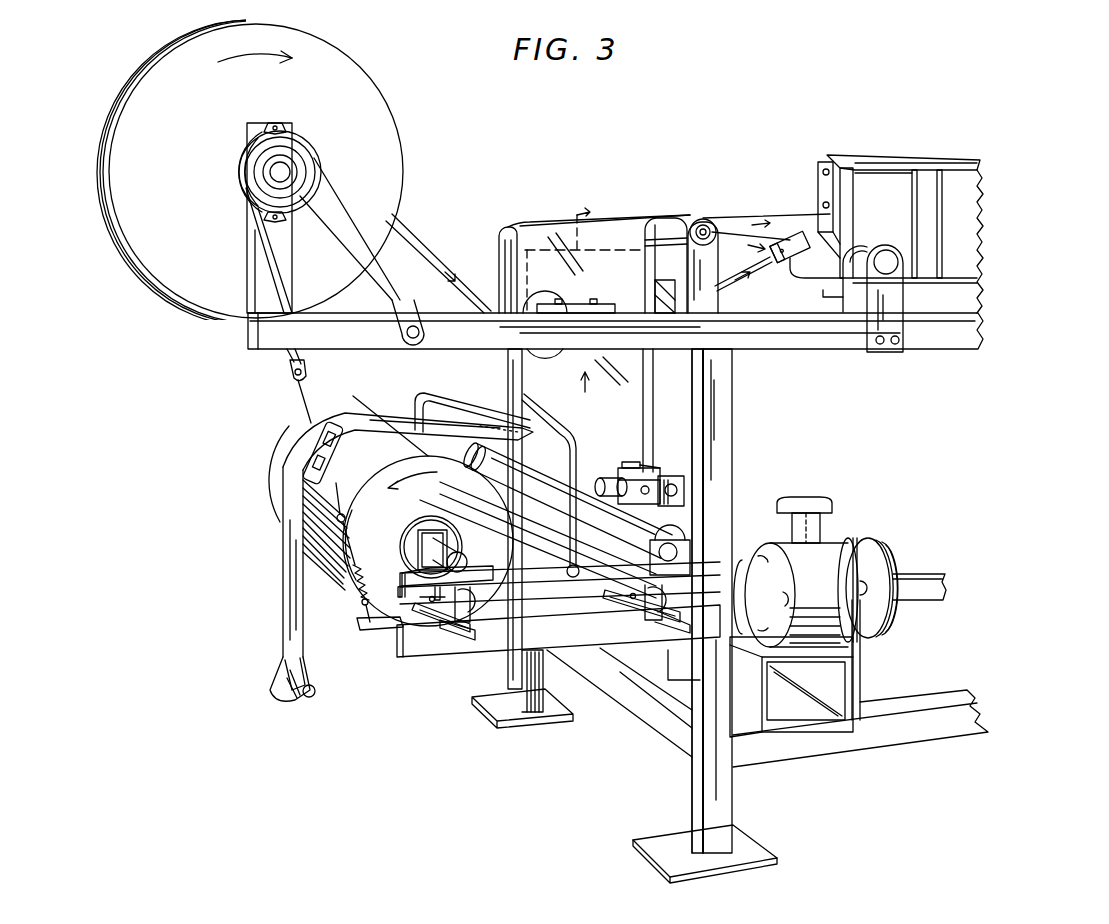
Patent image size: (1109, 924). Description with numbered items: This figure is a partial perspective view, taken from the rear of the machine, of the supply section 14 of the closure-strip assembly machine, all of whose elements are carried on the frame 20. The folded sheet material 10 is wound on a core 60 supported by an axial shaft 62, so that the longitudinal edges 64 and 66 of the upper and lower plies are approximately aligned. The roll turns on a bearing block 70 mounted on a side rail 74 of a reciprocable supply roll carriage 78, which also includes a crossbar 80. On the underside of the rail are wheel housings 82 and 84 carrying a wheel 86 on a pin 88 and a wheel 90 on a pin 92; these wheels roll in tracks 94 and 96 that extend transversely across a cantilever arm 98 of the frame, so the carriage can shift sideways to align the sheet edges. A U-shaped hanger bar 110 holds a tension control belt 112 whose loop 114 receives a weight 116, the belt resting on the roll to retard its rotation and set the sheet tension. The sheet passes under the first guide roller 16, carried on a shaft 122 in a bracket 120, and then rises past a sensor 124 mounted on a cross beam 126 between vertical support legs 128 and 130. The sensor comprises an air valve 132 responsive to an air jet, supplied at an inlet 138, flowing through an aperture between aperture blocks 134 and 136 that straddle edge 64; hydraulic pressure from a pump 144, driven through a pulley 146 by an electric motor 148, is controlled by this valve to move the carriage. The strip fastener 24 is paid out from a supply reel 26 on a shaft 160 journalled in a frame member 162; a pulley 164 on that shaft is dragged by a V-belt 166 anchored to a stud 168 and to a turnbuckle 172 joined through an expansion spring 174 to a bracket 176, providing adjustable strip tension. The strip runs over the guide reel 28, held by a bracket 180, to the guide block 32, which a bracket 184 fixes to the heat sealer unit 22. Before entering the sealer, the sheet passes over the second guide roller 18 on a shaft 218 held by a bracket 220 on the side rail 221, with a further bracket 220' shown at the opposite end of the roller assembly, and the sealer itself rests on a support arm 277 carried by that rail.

The folded sheet material 10 is at (620, 269).
The supply section 14 is at (475, 212).
The first guide roller 16 is at (478, 452).
The second guide roller 18 is at (663, 220).
The frame 20 is at (748, 368).
The first heat sealer unit 22 is at (867, 150).
The strip fastener 24 is at (420, 238).
The supply reel 26 is at (374, 134).
The guide reel 28 is at (545, 304).
The guide block 32 is at (795, 237).
The core 60 is at (431, 518).
The axial shaft 62 is at (458, 552).
The longitudinal edge 64 is at (645, 368).
The longitudinal edge 66 is at (756, 214).
The bearing block 70 is at (482, 566).
The side rail 74 is at (546, 592).
The supply roll carriage 78 is at (564, 566).
The crossbar 80 is at (541, 516).
The wheel housing 82 is at (462, 604).
The wheel housing 84 is at (682, 580).
The wheel 86 is at (445, 625).
The pin 88 is at (418, 598).
The wheel 90 is at (690, 603).
The pin 92 is at (628, 606).
The track 94 is at (468, 622).
The track 96 is at (660, 630).
The cantilever arm 98 is at (452, 650).
The hanger bar 110 is at (426, 392).
The tension control belt 112 is at (290, 590).
The loop 114 is at (280, 664).
The weight 116 is at (313, 696).
The bracket 120 is at (690, 560).
The shaft 122 is at (672, 506).
The sensor 124 is at (618, 466).
The cross beam 126 is at (520, 410).
The vertical support leg 128 is at (733, 453).
The vertical support leg 130 is at (508, 367).
The air valve 132 is at (610, 494).
The aperture block 134 is at (632, 460).
The aperture block 136 is at (650, 464).
The inlet 138 is at (643, 494).
The pump 144 is at (862, 628).
The pulley 146 is at (862, 548).
The electric motor 148 is at (750, 548).
The shaft 160 is at (264, 172).
The frame member 162 is at (280, 247).
The pulley 164 is at (300, 188).
The V-belt 166 is at (345, 218).
The stud 168 is at (421, 332).
The turnbuckle 172 is at (312, 452).
The expansion spring 174 is at (352, 548).
The bracket 176 is at (357, 622).
The bracket 180 is at (598, 304).
The bracket 184 is at (820, 180).
The shaft 218 is at (706, 224).
The bracket 220 is at (724, 267).
The post 220' is at (573, 260).
The side rail 221 is at (830, 336).
The support arm 277 is at (812, 279).